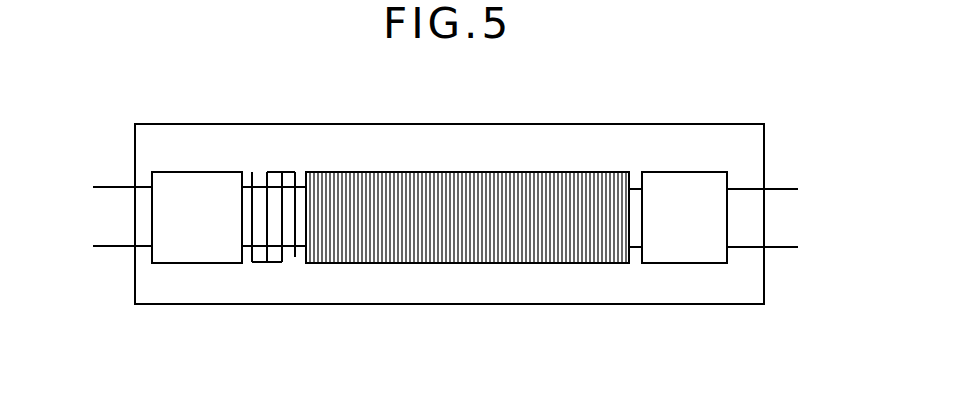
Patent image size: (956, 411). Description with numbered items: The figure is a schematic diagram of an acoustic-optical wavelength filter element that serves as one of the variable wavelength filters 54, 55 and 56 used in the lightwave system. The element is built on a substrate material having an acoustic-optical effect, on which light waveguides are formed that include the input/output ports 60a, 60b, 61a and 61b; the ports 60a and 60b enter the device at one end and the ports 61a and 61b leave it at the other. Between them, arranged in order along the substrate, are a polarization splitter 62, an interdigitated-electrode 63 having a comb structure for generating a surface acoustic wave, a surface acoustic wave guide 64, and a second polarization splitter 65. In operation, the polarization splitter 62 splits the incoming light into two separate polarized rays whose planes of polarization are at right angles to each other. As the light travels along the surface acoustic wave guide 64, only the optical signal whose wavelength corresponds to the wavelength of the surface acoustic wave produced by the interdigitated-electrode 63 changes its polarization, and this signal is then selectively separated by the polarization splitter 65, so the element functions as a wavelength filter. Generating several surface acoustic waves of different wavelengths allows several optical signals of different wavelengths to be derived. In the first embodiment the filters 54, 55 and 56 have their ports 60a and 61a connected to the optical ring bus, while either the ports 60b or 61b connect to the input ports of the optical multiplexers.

The variable wavelength filter 54 is at (451, 118).
The variable wavelength filter 55 is at (449, 188).
The variable wavelength filter 56 is at (449, 188).
The input/output port 60a is at (100, 186).
The input/output port 60b is at (100, 245).
The input/output port 61a is at (783, 189).
The input/output port 61b is at (784, 247).
The polarization splitter 62 is at (187, 263).
The interdigitated-electrode 63 is at (268, 263).
The surface acoustic wave guide 64 is at (450, 264).
The polarization splitter 65 is at (690, 264).